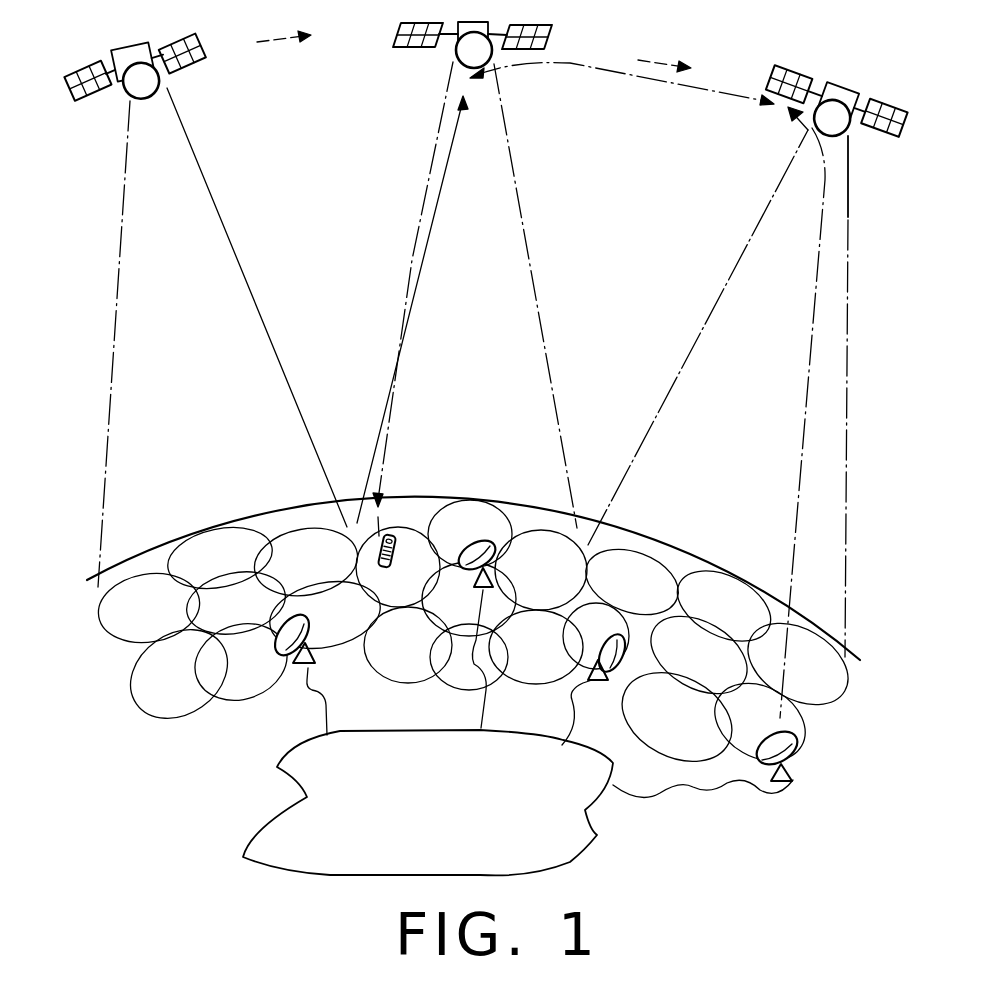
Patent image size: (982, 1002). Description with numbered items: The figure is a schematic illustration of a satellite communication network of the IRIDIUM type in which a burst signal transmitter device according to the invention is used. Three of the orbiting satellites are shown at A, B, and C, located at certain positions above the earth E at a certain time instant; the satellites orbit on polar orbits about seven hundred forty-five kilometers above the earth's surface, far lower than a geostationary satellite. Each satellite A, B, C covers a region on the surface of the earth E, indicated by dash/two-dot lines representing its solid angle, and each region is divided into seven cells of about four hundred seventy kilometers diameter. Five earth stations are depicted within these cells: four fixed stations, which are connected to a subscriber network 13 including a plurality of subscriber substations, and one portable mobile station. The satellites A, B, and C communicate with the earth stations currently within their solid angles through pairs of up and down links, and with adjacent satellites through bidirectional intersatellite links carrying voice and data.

The satellite A is at (118, 46).
The satellite B is at (477, 22).
The satellite C is at (838, 87).
The earth E is at (270, 513).
The subscriber network 13 is at (603, 837).